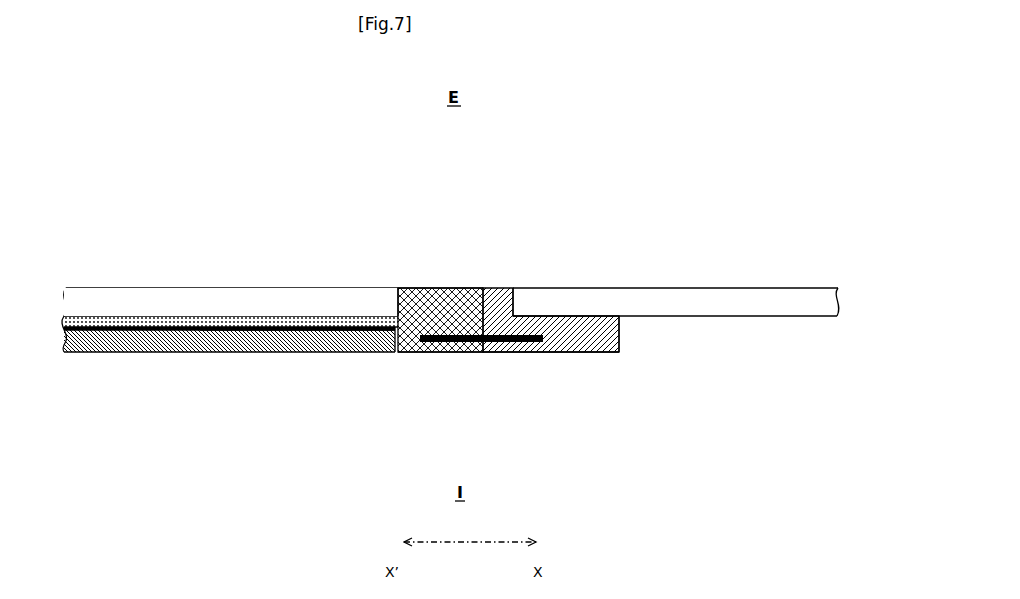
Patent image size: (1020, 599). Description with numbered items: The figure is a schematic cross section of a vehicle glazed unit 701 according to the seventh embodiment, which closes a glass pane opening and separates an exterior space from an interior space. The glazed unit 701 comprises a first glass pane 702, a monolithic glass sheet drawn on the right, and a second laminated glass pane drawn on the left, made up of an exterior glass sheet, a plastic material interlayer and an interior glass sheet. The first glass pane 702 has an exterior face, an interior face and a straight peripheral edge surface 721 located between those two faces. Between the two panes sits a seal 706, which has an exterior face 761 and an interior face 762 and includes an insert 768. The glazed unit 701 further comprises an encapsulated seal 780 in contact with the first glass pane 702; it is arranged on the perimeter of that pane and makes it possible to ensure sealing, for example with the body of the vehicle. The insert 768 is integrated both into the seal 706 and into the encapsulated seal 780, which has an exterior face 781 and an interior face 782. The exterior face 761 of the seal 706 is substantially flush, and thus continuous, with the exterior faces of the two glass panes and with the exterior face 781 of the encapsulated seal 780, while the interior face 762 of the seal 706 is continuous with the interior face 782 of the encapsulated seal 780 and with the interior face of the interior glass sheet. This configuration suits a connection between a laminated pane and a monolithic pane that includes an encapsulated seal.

The glazed unit 701 is at (404, 197).
The first glass pane 702 is at (665, 276).
The seal 706 is at (454, 273).
The peripheral edge surface 721 is at (515, 294).
The exterior face 761 is at (463, 288).
The interior face 762 is at (425, 350).
The insert 768 is at (473, 350).
The encapsulated seal 780 is at (565, 343).
The exterior face 781 is at (502, 288).
The interior face 782 is at (553, 350).